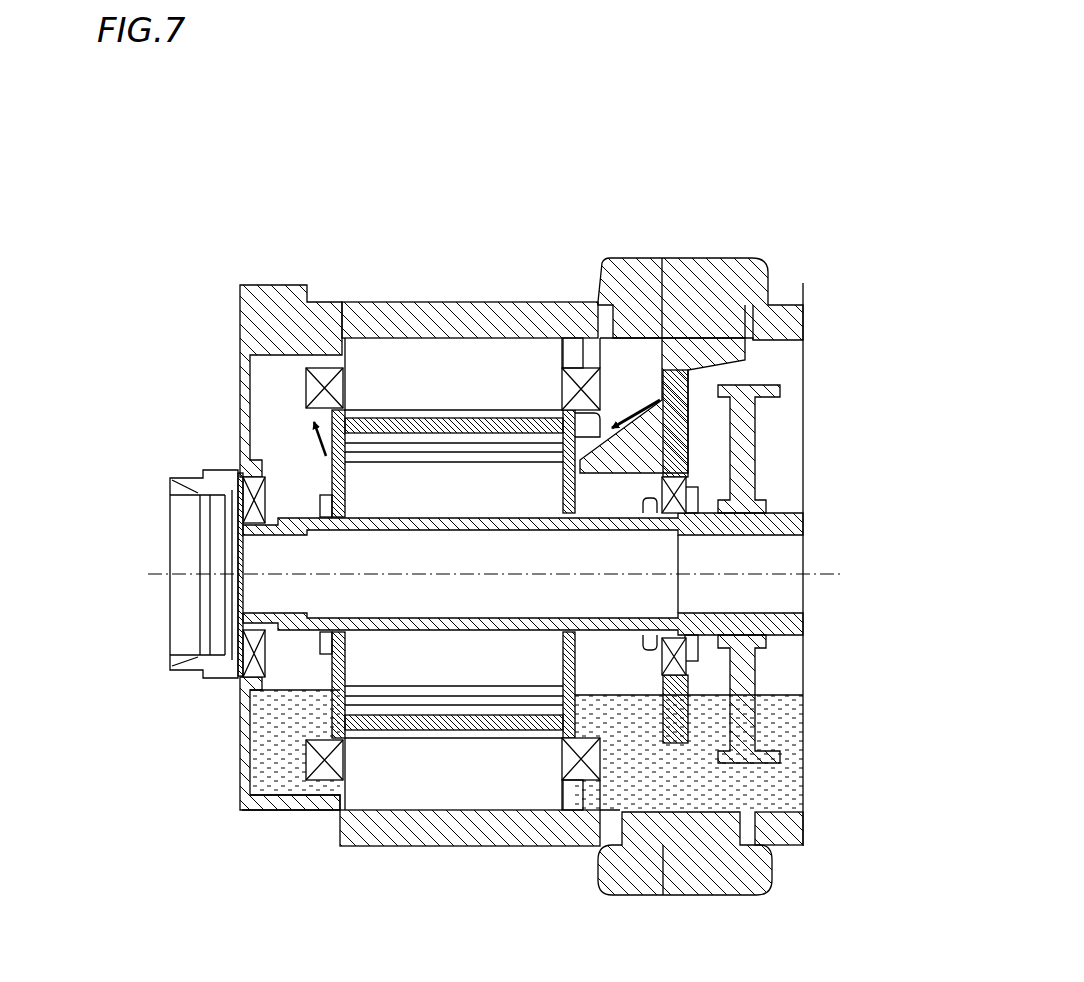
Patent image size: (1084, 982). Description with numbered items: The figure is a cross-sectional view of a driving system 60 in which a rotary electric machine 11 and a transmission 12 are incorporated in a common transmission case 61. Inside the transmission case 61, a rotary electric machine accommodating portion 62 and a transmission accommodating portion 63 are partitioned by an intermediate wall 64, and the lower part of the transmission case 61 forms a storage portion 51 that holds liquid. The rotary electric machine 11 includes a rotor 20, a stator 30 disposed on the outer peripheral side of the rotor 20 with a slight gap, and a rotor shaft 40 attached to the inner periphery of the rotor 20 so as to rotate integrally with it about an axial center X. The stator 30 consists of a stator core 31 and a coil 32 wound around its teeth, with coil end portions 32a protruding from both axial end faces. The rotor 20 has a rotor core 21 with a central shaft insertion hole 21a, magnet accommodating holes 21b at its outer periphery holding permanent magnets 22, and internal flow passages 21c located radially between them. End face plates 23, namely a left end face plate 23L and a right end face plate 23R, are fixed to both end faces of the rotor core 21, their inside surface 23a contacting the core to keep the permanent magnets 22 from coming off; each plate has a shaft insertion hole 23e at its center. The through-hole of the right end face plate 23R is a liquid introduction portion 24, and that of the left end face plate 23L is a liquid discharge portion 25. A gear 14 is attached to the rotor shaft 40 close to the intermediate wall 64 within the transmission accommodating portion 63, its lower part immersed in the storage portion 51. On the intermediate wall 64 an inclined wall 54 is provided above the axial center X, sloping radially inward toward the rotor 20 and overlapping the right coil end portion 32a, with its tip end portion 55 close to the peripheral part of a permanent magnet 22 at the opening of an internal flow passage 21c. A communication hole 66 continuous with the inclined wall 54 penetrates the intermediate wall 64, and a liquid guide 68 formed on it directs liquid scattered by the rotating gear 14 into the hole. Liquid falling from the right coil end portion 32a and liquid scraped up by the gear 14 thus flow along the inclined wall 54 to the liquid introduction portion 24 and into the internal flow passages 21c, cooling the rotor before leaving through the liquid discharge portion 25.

The driving system 60 is at (520, 125).
The axial center X is at (832, 580).
The rotary electric machine 11 is at (266, 386).
The transmission 12 is at (788, 392).
The gear 14 is at (746, 435).
The rotor 20 is at (253, 676).
The rotor core 21 is at (520, 362).
The shaft insertion hole 21a is at (487, 745).
The magnet accommodating hole 21b is at (448, 745).
The internal flow passage 21c is at (395, 445).
The permanent magnet 22 is at (432, 440).
The end face plate 23 is at (504, 573).
The left end face plate 23L is at (345, 468).
The right end face plate 23R is at (575, 678).
The inside surface 23a is at (366, 452).
The shaft insertion hole 23e is at (243, 668).
The liquid introduction portion 24 is at (575, 348).
The liquid discharge portion 25 is at (322, 457).
The stator 30 is at (613, 305).
The stator core 31 is at (478, 350).
The coil 32 is at (438, 493).
The coil end portion 32a is at (322, 372).
The rotor shaft 40 is at (805, 528).
The storage portion 51 is at (280, 797).
The inclined wall 54 is at (664, 350).
The tip end portion 55 is at (688, 462).
The transmission case 61 is at (268, 780).
The rotary electric machine accommodating portion 62 is at (620, 690).
The transmission accommodating portion 63 is at (790, 682).
The intermediate wall 64 is at (675, 745).
The communication hole 66 is at (690, 330).
The liquid guide 68 is at (730, 305).